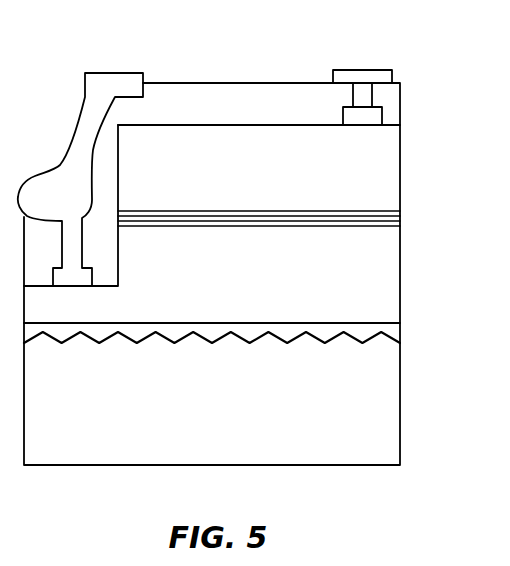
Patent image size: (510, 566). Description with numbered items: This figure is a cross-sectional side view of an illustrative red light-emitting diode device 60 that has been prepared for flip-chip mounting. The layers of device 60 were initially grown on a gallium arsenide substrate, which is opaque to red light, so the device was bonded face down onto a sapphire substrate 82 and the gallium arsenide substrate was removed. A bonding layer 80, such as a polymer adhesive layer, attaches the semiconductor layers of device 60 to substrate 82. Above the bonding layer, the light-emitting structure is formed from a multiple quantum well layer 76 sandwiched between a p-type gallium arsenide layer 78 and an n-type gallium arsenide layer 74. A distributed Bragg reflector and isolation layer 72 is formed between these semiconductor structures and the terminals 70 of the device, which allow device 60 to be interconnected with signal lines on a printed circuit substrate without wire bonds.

The device 60 is at (419, 56).
The terminals 70 is at (100, 85).
The distributed Bragg reflector and isolation layer 72 is at (216, 100).
The n-type gallium arsenide layer 74 is at (390, 172).
The multiple quantum well layer 76 is at (403, 215).
The p-type gallium arsenide layer 78 is at (390, 275).
The bonding layer 80 is at (390, 332).
The substrate 82 is at (390, 399).